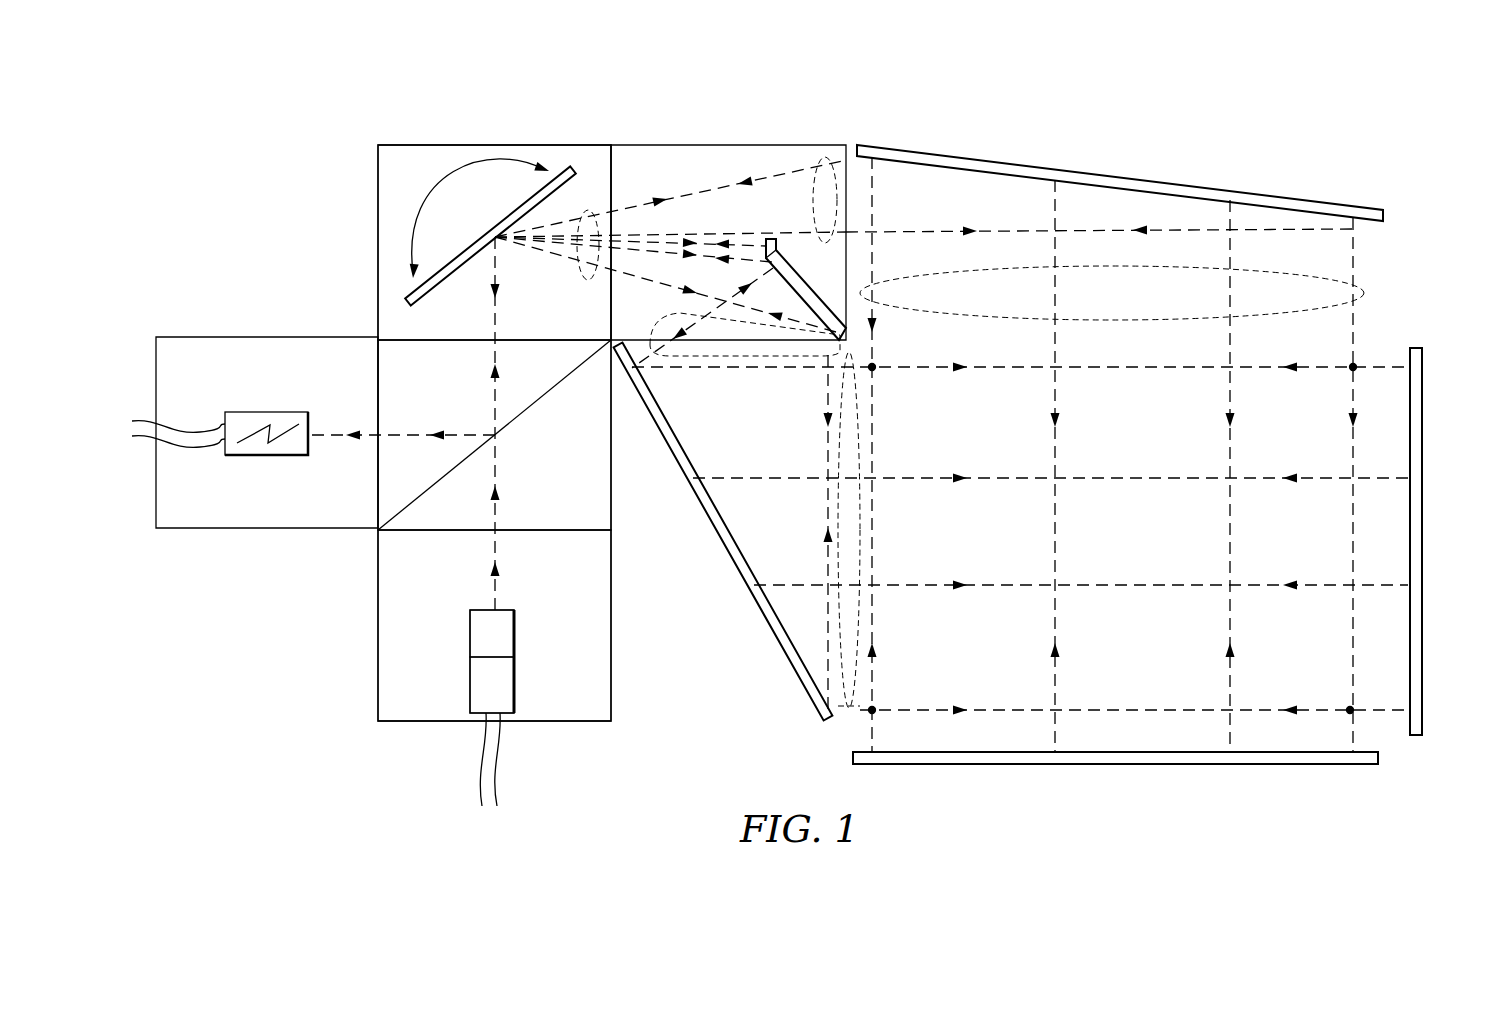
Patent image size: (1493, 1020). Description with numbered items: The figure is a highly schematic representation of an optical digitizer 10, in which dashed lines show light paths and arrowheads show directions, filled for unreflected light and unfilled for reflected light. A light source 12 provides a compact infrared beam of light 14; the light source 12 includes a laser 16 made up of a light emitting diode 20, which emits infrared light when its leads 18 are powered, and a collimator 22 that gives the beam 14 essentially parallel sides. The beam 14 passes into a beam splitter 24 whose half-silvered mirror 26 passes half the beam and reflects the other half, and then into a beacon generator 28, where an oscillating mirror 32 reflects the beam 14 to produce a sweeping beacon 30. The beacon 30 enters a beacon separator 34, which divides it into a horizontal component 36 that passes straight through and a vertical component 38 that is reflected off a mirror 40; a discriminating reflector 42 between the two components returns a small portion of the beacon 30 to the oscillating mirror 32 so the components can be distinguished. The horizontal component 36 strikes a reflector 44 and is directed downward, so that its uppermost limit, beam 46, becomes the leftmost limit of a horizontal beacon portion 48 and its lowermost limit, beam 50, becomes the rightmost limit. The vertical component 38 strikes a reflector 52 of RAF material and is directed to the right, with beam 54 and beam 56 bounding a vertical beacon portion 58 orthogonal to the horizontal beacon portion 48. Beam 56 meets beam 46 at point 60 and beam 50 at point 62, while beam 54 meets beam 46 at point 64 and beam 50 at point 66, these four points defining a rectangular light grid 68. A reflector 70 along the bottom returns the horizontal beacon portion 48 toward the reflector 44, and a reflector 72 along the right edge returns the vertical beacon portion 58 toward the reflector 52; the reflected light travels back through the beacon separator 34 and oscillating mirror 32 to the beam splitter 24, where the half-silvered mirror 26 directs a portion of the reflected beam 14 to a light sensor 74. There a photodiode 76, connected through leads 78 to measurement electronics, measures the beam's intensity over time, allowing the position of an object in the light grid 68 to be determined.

The optical digitizer 10 is at (296, 104).
The light source 12 is at (370, 622).
The beam of light 14 is at (490, 400).
The laser 16 is at (522, 630).
The leads 18 is at (482, 758).
The light emitting diode 20 is at (472, 684).
The collimator 22 is at (472, 632).
The beam splitter 24 is at (632, 505).
The half-silvered mirror 26 is at (528, 400).
The beacon generator 28 is at (372, 240).
The beacon 30 is at (589, 282).
The oscillating mirror 32 is at (489, 228).
The beacon separator 34 is at (638, 138).
The horizontal component 36 is at (820, 158).
The vertical component 38 is at (748, 358).
The mirror 40 is at (826, 315).
The discriminating reflector 42 is at (775, 238).
The reflector 44 is at (1142, 178).
The beam 46 is at (688, 196).
The horizontal beacon portion 48 is at (1365, 294).
The beam 50 is at (900, 228).
The reflector 52 is at (766, 620).
The beam 54 is at (826, 520).
The beam 56 is at (642, 363).
The vertical beacon portion 58 is at (850, 720).
The point 60 is at (876, 370).
The point 62 is at (1348, 371).
The point 64 is at (876, 706).
The point 66 is at (1346, 706).
The light grid 68 is at (1167, 712).
The reflector 70 is at (976, 766).
The reflector 72 is at (1424, 525).
The light sensor 74 is at (262, 538).
The photodiode 76 is at (268, 410).
The leads 78 is at (198, 424).